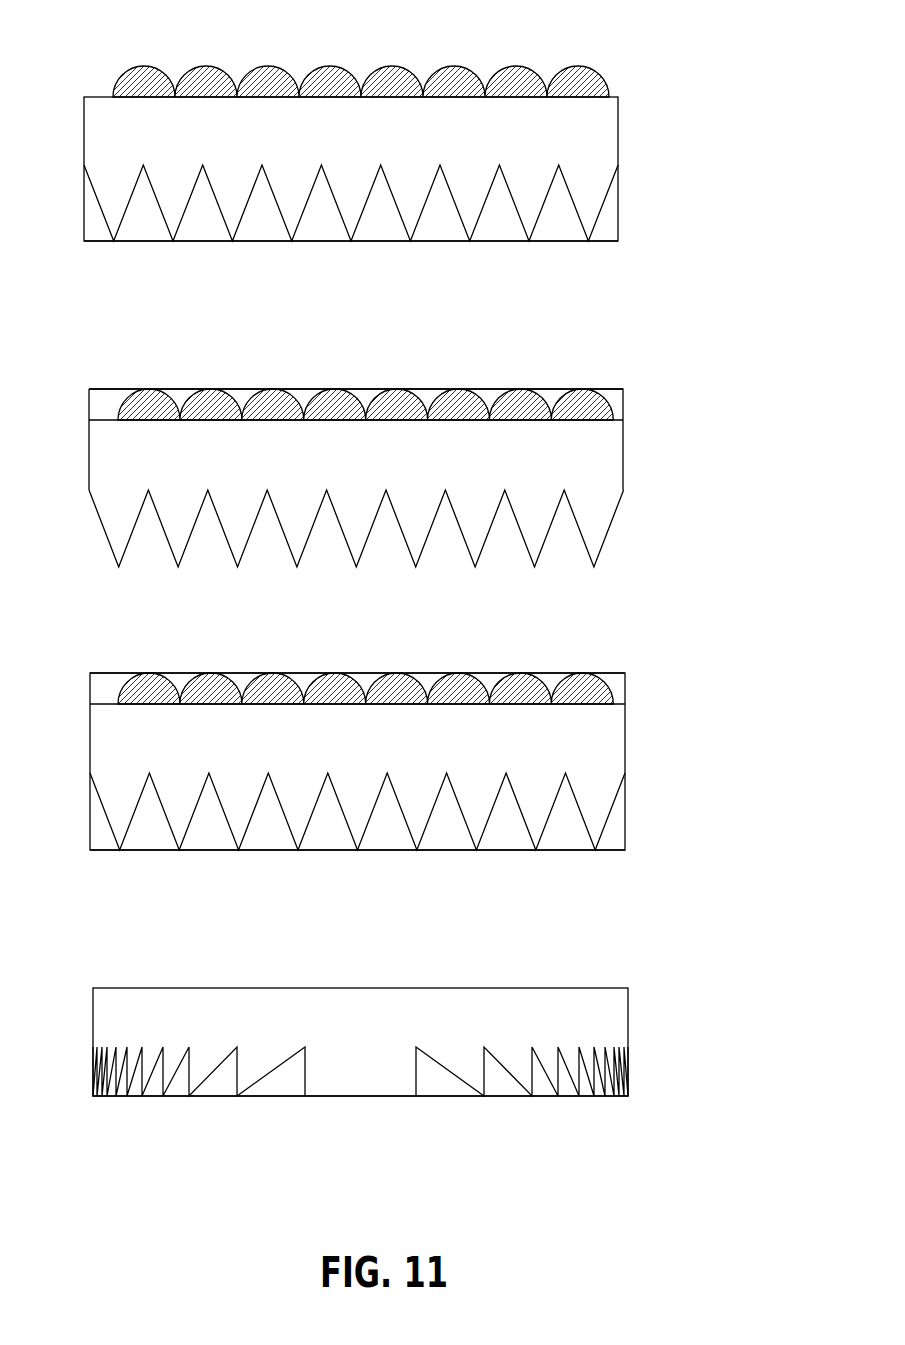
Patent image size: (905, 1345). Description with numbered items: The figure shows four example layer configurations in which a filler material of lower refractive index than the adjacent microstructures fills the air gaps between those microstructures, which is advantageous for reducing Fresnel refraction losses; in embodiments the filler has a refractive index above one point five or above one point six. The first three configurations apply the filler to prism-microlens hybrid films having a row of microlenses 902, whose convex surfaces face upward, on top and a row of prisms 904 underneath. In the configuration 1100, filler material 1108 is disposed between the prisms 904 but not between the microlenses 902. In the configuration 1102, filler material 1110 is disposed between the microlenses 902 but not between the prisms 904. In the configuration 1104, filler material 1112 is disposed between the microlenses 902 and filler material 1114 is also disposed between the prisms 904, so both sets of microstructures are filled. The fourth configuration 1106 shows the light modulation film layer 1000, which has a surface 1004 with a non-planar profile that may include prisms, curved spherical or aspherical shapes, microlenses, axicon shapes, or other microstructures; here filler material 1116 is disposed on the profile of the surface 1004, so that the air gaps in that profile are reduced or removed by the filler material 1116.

The microlenses 902 is at (452, 63).
The prisms 904 is at (351, 241).
The light modulation film layer 1000 is at (388, 1046).
The surface 1004 is at (255, 1082).
The configuration 1100 is at (657, 172).
The configuration 1102 is at (657, 496).
The configuration 1104 is at (657, 762).
The configuration 1106 is at (657, 1026).
The filler material 1108 is at (618, 241).
The filler material 1110 is at (623, 389).
The filler material 1112 is at (625, 673).
The filler material 1114 is at (625, 850).
The filler material 1116 is at (468, 1096).